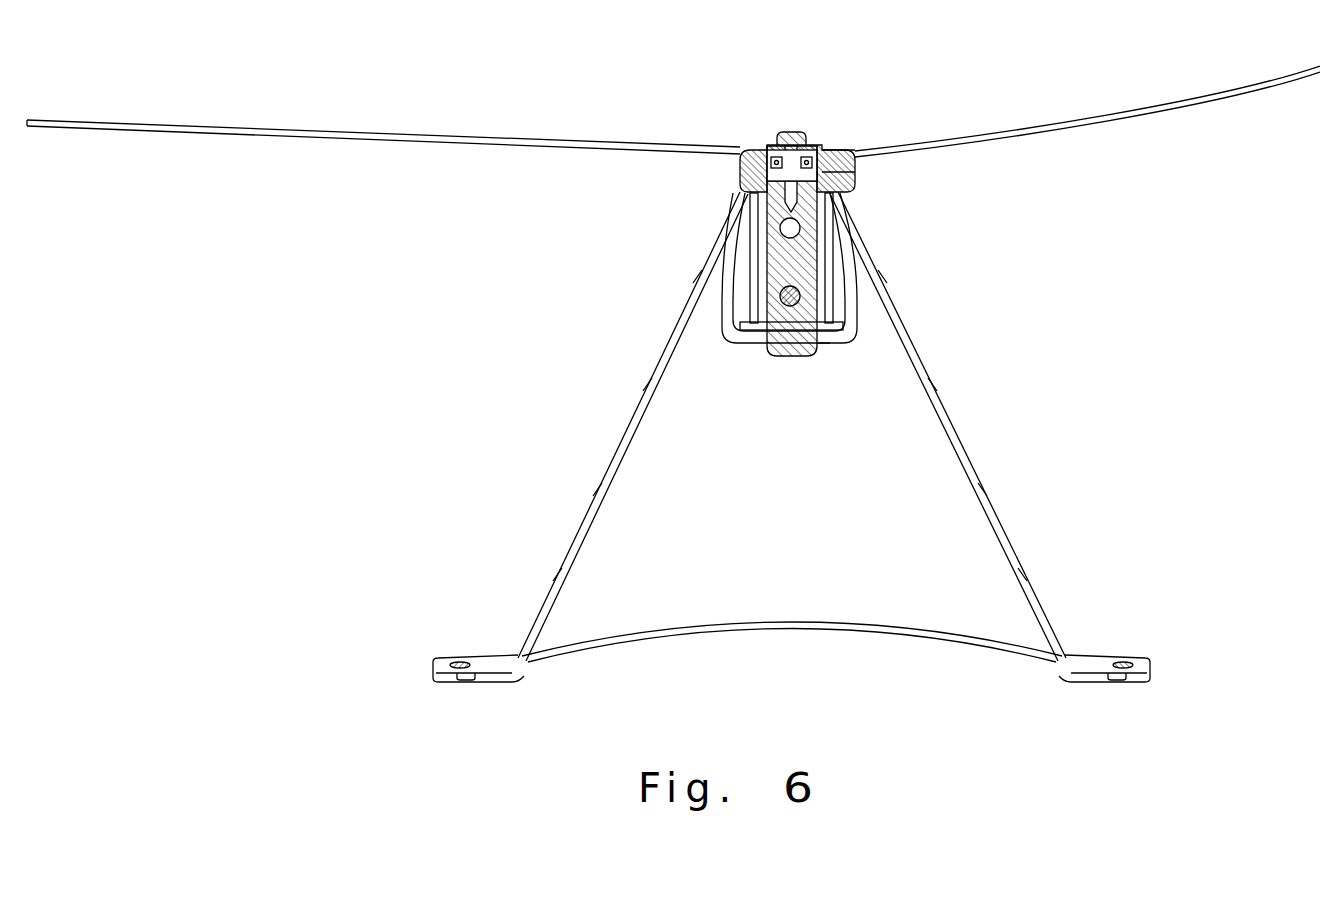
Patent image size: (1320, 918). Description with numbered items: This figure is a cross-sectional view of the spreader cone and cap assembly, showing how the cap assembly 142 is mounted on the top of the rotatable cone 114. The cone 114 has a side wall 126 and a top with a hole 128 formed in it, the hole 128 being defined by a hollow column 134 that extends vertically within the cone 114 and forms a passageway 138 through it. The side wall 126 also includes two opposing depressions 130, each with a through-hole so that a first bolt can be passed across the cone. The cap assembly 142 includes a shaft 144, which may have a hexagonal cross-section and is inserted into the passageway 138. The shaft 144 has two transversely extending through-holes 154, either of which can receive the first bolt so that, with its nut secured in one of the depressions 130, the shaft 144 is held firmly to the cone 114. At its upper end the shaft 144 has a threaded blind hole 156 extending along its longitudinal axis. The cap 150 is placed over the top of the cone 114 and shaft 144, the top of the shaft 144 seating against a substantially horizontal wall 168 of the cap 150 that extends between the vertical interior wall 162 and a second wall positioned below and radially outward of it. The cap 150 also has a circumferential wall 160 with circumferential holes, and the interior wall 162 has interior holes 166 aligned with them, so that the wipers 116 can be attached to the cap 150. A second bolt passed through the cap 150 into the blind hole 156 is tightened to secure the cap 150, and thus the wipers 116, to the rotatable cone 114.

The cone 114 is at (1030, 422).
The wipers 116 is at (1201, 98).
The side wall 126 is at (1030, 580).
The hole 128 is at (752, 165).
The depressions 130 is at (846, 316).
The hollow column 134 is at (856, 257).
The passageway 138 is at (779, 295).
The cap assembly 142 is at (850, 108).
The shaft 144 is at (833, 345).
The cap 150 is at (846, 150).
The through-holes 154 is at (832, 226).
The blind hole 156 is at (778, 203).
The circumferential wall 160 is at (850, 173).
The interior wall 162 is at (770, 150).
The interior holes 166 is at (815, 150).
The horizontal wall 168 is at (835, 145).